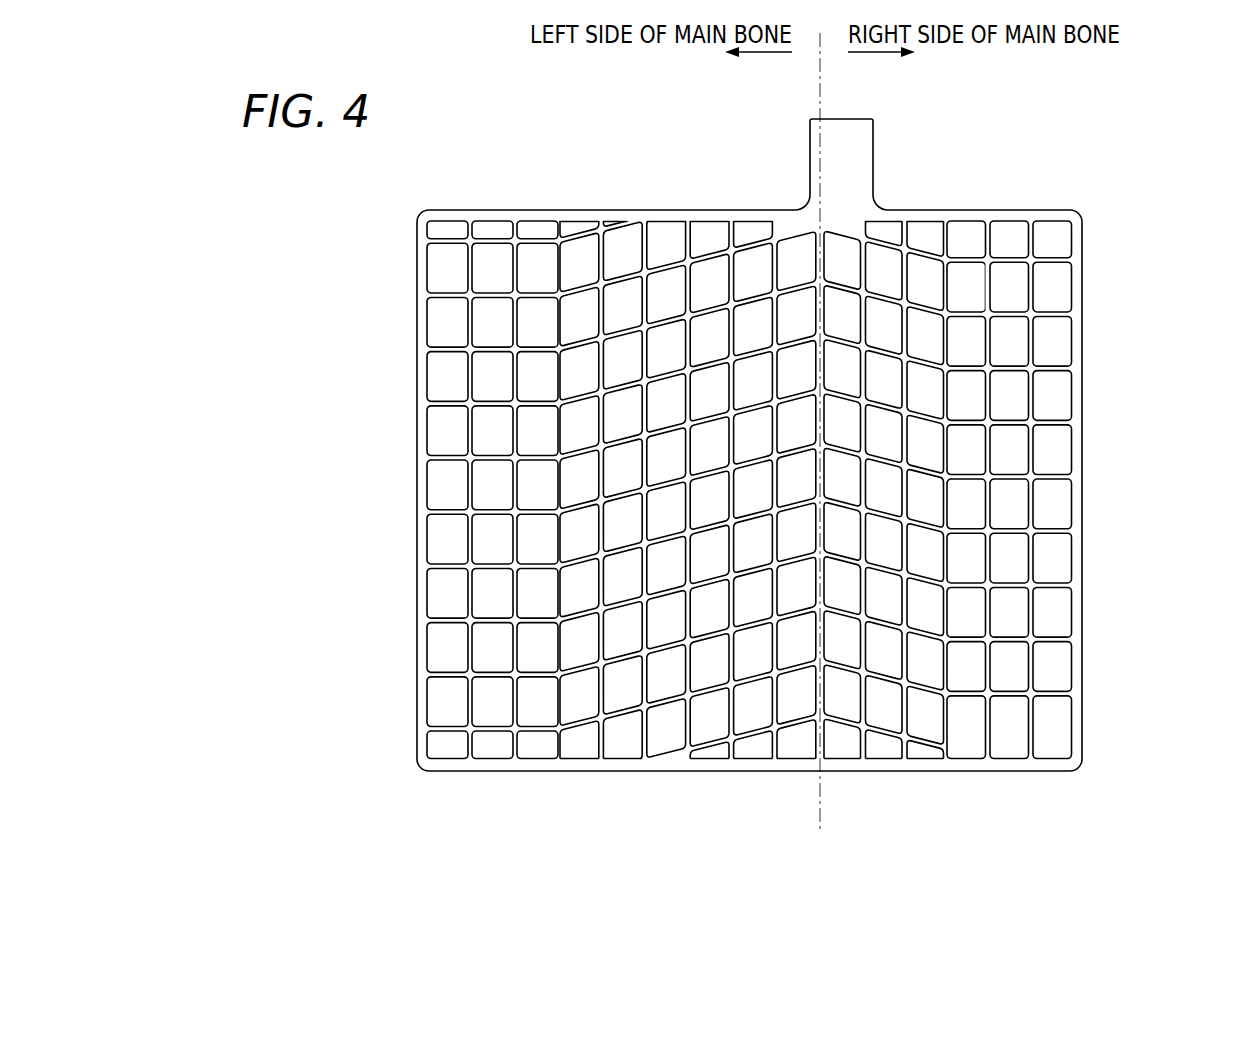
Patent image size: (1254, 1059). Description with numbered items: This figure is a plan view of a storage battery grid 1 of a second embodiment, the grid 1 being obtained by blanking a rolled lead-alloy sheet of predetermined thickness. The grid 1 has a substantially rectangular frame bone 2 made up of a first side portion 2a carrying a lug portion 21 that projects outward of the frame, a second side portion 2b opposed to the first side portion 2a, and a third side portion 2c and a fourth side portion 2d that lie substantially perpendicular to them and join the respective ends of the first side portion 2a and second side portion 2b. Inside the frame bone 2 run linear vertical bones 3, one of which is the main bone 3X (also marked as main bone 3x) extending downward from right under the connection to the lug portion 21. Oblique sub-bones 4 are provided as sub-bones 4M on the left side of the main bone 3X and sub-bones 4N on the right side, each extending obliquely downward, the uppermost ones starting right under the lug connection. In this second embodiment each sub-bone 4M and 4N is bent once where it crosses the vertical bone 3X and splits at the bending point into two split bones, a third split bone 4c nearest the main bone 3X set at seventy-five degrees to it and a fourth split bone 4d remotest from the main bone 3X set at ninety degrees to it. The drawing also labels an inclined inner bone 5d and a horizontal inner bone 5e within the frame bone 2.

The grid 1 is at (1210, 119).
The frame bone 2 is at (1076, 207).
The first side portion 2a is at (632, 199).
The second side portion 2b is at (768, 772).
The third side portion 2c is at (418, 426).
The fourth side portion 2d is at (1083, 397).
The lug portion 21 is at (857, 118).
The vertical bone 3 is at (517, 702).
The main bone 3x is at (562, 322).
The main bone 3X is at (824, 632).
The sub-bone 4 is at (761, 485).
The sub-bone 4M is at (450, 293).
The sub-bone 4N is at (1062, 298).
The third split bone 4c is at (667, 314).
The fourth split bone 4d is at (493, 347).
The inclined inner bone 5d is at (920, 522).
The horizontal inner bone 5e is at (1013, 688).